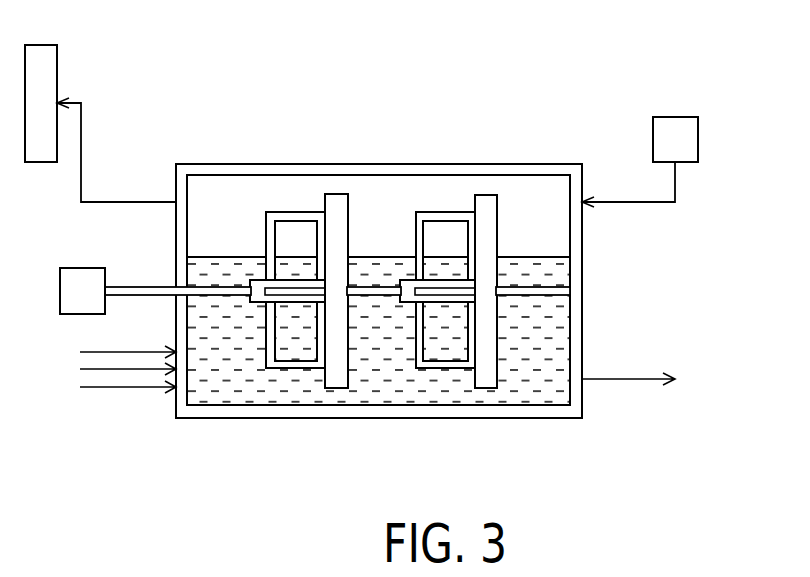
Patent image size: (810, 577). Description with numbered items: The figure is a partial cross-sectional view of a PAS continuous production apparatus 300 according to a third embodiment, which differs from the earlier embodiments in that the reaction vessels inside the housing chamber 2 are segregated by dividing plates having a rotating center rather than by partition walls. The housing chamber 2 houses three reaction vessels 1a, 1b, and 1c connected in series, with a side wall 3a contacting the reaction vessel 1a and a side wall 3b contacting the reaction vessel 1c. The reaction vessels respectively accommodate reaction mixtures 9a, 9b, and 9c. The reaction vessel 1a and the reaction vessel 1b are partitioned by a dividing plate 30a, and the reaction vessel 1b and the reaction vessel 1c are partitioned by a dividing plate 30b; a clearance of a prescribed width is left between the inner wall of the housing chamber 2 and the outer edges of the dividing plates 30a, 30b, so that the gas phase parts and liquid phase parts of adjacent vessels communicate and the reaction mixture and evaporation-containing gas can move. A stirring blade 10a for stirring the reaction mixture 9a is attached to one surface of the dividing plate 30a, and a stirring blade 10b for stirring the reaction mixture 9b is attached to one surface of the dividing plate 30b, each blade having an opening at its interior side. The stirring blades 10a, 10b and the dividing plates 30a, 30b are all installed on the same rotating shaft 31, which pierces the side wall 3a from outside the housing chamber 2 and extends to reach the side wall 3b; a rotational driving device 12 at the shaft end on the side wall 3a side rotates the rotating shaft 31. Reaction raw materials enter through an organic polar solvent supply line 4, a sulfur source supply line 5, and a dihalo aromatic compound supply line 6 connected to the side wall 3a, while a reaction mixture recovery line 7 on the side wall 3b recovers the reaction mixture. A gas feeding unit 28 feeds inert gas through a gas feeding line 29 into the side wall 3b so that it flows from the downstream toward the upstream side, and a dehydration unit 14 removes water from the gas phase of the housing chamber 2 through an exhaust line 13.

The PAS continuous production apparatus 300 is at (535, 75).
The housing chamber 2 is at (580, 142).
The reaction vessel 1a is at (242, 197).
The reaction vessel 1b is at (391, 197).
The reaction vessel 1c is at (533, 195).
The reaction mixture 9a is at (233, 392).
The reaction mixture 9b is at (368, 392).
The reaction mixture 9c is at (527, 390).
The stirring blade 10a is at (296, 215).
The stirring blade 10b is at (445, 215).
The dividing plate 30a is at (336, 200).
The dividing plate 30b is at (484, 200).
The rotating shaft 31 is at (140, 285).
The rotational driving device 12 is at (85, 268).
The exhaust line 13 is at (129, 200).
The dehydration unit 14 is at (58, 67).
The gas feeding unit 28 is at (677, 117).
The gas feeding line 29 is at (628, 202).
The organic polar solvent supply line 4 is at (94, 351).
The sulfur source supply line 5 is at (94, 368).
The dihalo aromatic compound supply line 6 is at (94, 386).
The reaction mixture recovery line 7 is at (628, 378).
The side wall 3a is at (175, 394).
The side wall 3b is at (582, 395).